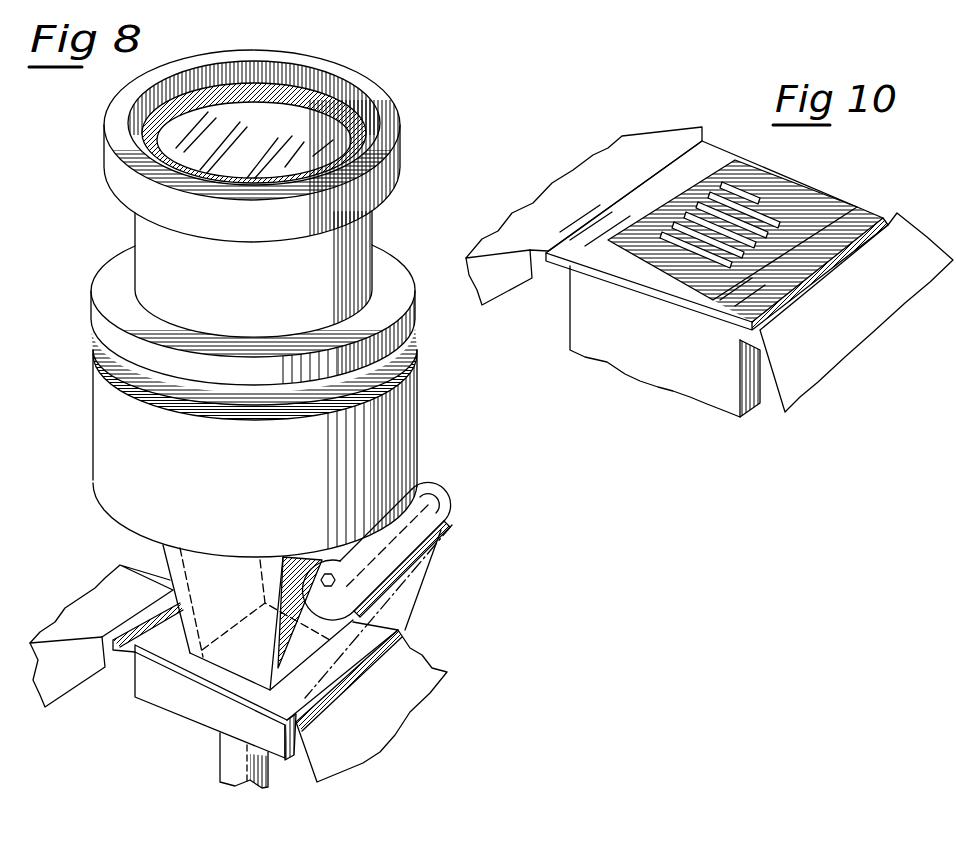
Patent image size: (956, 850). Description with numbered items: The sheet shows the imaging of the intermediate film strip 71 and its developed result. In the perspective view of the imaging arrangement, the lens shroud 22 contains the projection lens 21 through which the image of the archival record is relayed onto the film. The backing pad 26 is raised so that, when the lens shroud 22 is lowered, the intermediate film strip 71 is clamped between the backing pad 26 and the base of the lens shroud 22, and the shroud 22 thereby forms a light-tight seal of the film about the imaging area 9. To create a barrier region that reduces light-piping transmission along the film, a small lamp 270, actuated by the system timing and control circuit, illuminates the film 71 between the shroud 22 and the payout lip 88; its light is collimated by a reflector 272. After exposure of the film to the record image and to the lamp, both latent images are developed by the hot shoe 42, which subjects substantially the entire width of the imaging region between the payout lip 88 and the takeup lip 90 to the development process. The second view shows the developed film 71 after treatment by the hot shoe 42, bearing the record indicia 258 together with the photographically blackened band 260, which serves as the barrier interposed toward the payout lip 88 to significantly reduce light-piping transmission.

In FIG. 8, the projection lens 21 is at (237, 155).
In FIG. 8, the lens shroud 22 is at (163, 553).
In FIG. 8, the imaging area 9 is at (239, 652).
In FIG. 8, the reflector 272 is at (446, 482).
In FIG. 8, the small lamp 270 is at (436, 519).
In FIG. 8, the takeup lip 90 is at (68, 697).
In FIG. 10, the takeup lip 90 is at (505, 296).
In FIG. 8, the backing pad 26 is at (136, 682).
In FIG. 8, the payout lip 88 is at (310, 768).
In FIG. 10, the payout lip 88 is at (781, 400).
In FIG. 10, the intermediate film strip 71 is at (727, 142).
In FIG. 10, the record indicia 258 is at (771, 217).
In FIG. 10, the blackened band 260 is at (857, 206).
In FIG. 10, the hot shoe 42 is at (570, 338).